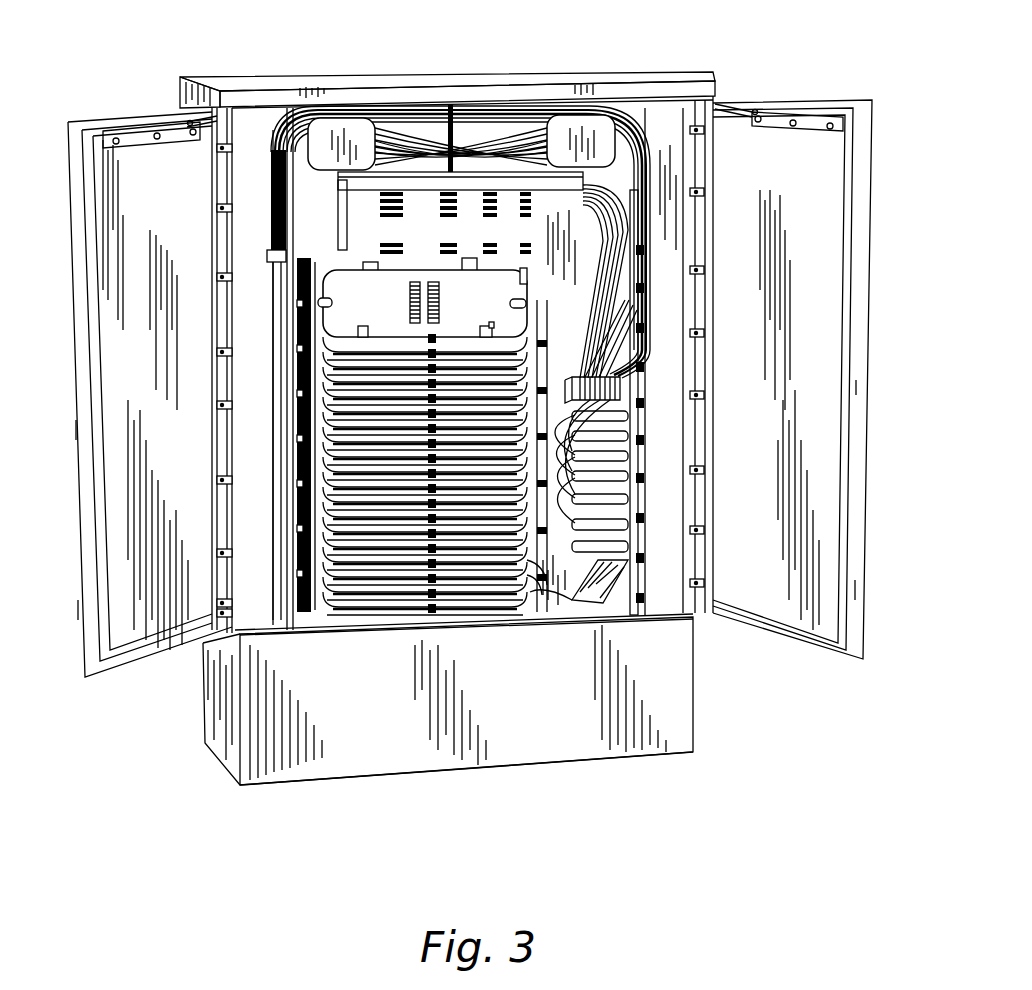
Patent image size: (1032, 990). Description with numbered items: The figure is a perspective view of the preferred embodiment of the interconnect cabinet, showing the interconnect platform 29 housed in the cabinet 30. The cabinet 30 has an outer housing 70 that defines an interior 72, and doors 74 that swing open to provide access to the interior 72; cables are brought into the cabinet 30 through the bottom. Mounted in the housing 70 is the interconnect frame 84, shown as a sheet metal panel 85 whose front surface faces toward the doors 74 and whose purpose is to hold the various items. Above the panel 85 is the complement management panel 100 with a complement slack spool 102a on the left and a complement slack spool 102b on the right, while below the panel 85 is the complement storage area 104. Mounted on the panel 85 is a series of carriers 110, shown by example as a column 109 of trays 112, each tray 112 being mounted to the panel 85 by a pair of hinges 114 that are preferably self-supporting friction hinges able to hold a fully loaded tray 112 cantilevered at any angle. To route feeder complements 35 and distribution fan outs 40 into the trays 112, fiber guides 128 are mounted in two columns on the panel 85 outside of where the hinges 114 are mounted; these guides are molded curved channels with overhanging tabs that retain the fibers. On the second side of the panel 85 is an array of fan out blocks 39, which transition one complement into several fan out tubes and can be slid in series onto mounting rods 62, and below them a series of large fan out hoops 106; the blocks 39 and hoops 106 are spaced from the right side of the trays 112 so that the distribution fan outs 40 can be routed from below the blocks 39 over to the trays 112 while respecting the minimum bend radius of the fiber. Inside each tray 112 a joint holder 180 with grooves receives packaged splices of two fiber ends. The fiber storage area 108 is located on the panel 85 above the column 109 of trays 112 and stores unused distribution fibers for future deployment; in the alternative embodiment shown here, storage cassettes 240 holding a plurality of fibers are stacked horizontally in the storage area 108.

The interconnect platform 29 is at (533, 588).
The cabinet 30 is at (592, 80).
The feeder complements 35 is at (308, 551).
The fan out blocks 39 is at (610, 394).
The distribution fan outs 40 is at (634, 447).
The mounting rods 62 is at (598, 363).
The outer housing 70 is at (683, 706).
The interior 72 is at (598, 607).
The doors 74 is at (858, 532).
The interconnect frame 84 is at (543, 592).
The sheet metal panel 85 is at (315, 169).
The complement management panel 100 is at (394, 145).
The complement slack spool 102a is at (332, 127).
The complement slack spool 102b is at (600, 123).
The complement storage area 104 is at (387, 757).
The fan out hoops 106 is at (628, 538).
The fiber storage area 108 is at (497, 190).
The column 109 is at (397, 628).
The carriers 110 is at (422, 268).
The trays 112 is at (447, 277).
The hinges 114 is at (371, 262).
The fiber guides 128 is at (335, 268).
The joint holder 180 is at (408, 305).
The storage cassettes 240 is at (466, 184).